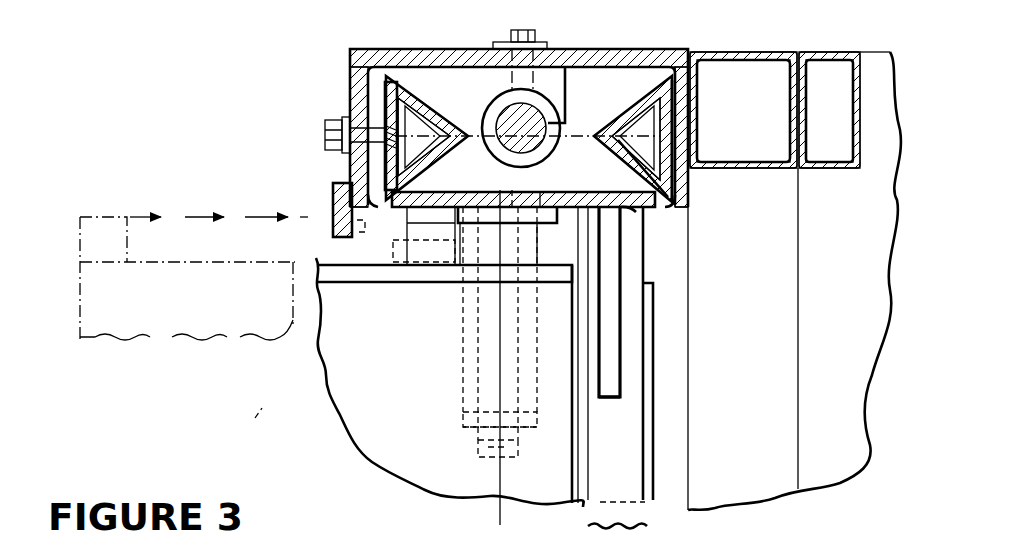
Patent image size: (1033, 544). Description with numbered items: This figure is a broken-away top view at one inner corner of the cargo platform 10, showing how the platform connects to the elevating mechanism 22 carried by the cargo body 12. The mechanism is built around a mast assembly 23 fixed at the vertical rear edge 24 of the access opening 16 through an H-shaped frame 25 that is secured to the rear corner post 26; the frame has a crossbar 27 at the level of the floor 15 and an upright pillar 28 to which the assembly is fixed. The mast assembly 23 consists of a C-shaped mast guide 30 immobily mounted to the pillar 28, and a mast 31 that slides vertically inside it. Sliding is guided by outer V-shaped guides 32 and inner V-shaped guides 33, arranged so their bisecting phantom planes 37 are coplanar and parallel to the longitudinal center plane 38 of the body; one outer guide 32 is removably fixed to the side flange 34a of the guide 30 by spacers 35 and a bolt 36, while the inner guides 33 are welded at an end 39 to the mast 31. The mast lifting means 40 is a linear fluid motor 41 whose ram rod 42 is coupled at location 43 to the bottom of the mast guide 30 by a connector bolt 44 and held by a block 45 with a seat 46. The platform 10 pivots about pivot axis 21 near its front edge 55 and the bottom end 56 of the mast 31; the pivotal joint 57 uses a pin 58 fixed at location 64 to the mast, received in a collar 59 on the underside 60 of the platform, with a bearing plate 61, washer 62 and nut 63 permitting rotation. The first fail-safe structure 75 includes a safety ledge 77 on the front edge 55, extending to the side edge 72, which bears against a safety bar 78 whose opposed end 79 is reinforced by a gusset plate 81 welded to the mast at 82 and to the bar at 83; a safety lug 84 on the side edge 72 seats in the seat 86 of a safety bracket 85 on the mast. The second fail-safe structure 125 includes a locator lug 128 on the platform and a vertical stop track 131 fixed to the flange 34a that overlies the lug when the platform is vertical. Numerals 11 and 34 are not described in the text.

The cargo platform 10 is at (298, 412).
The door frame 11 is at (851, 14).
The cargo body 12 is at (899, 192).
The floor 15 is at (863, 293).
The access opening 16 is at (759, 463).
The pivot axis 21 is at (498, 518).
The elevating mechanism 22 is at (187, 106).
The mast assembly 23 is at (345, 47).
The vertical rear edge 24 is at (795, 90).
The H-shaped frame 25 is at (766, 341).
The rear corner post 26 is at (843, 170).
The crossbar 27 is at (751, 405).
The upright pillar 28 is at (752, 168).
The mast guide 30 is at (633, 48).
The mast 31 is at (589, 176).
The outer V-shaped guide 32 is at (390, 82).
The inner V-shaped guide 33 is at (412, 92).
The top wall 34 is at (360, 48).
The side flange 34a is at (358, 86).
The spacer 35 is at (378, 146).
The bolt 36 is at (325, 139).
The phantom plane 37 is at (600, 132).
The longitudinal center plane 38 is at (809, 533).
The end 39 is at (412, 192).
The mast lifting means 40 is at (591, 33).
The linear fluid motor 41 is at (552, 100).
The ram rod 42 is at (483, 118).
The coupling end 43 is at (562, 8).
The connector bolt 44 is at (523, 30).
The block 45 is at (586, 58).
The seat 46 is at (501, 47).
The front edge 55 is at (568, 517).
The bottom end 56 is at (556, 187).
The pivotal joint 57 is at (491, 251).
The pin 58 is at (462, 398).
The collar 59 is at (446, 440).
The underside 60 is at (413, 503).
The bearing plate 61 is at (520, 236).
The washer 62 is at (518, 448).
The nut 63 is at (483, 460).
The pin fixing location 64 is at (513, 188).
The side edge 72 is at (316, 252).
The first fail-safe structure 75 is at (673, 296).
The safety ledge 77 is at (653, 447).
The safety bar 78 is at (627, 461).
The opposed end 79 is at (640, 210).
The gusset plate 81 is at (620, 345).
The weld to mast 82 is at (630, 198).
The weld to safety bar 83 is at (622, 381).
The safety lug 84 is at (408, 265).
The safety bracket 85 is at (395, 262).
The seat 86 is at (458, 280).
The second fail-safe structure 125 is at (306, 202).
The locator lug 128 is at (120, 209).
The stop track 131 is at (336, 226).